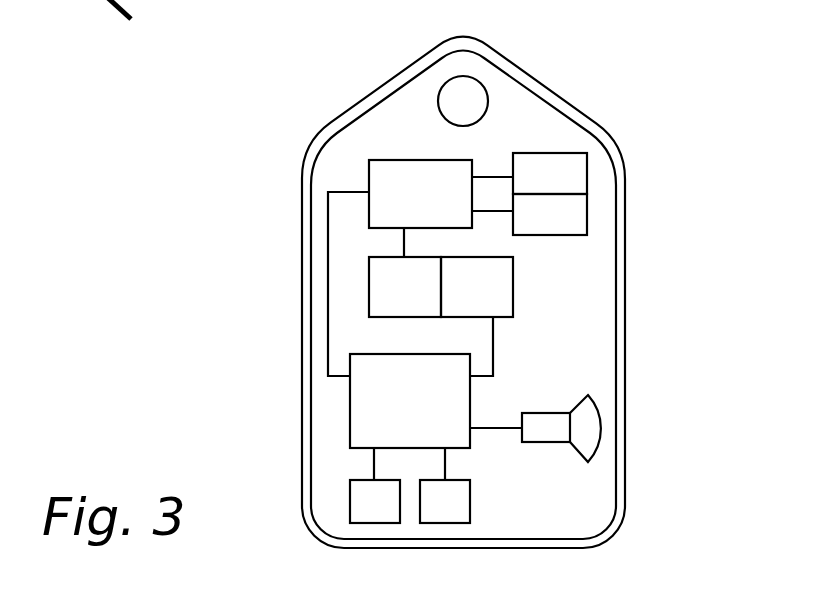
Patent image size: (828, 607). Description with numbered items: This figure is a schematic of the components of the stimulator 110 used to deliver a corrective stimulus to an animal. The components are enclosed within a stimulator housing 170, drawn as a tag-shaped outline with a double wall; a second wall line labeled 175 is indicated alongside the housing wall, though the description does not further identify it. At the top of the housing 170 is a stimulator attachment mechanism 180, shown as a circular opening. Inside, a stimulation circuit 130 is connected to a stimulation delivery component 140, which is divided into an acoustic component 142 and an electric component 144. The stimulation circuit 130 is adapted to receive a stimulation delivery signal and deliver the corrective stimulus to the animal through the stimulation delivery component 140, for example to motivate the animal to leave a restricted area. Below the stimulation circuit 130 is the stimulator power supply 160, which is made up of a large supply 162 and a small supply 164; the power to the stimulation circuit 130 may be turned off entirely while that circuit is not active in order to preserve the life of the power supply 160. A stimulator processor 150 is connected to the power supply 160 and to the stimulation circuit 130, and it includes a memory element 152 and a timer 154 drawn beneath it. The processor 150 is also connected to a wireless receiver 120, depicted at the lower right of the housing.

The stimulator 110 is at (379, 292).
The wireless receiver 120 is at (577, 438).
The stimulation circuit 130 is at (420, 268).
The stimulation delivery component 140 is at (603, 154).
The acoustic component 142 is at (551, 165).
The electric component 144 is at (577, 216).
The stimulator processor 150 is at (436, 417).
The memory element 152 is at (358, 517).
The timer 154 is at (447, 512).
The stimulator power supply 160 is at (460, 319).
The large supply 162 is at (382, 294).
The small supply 164 is at (500, 272).
The stimulator housing 170 is at (302, 246).
The inner housing wall 175 is at (302, 364).
The stimulator attachment mechanism 180 is at (453, 92).